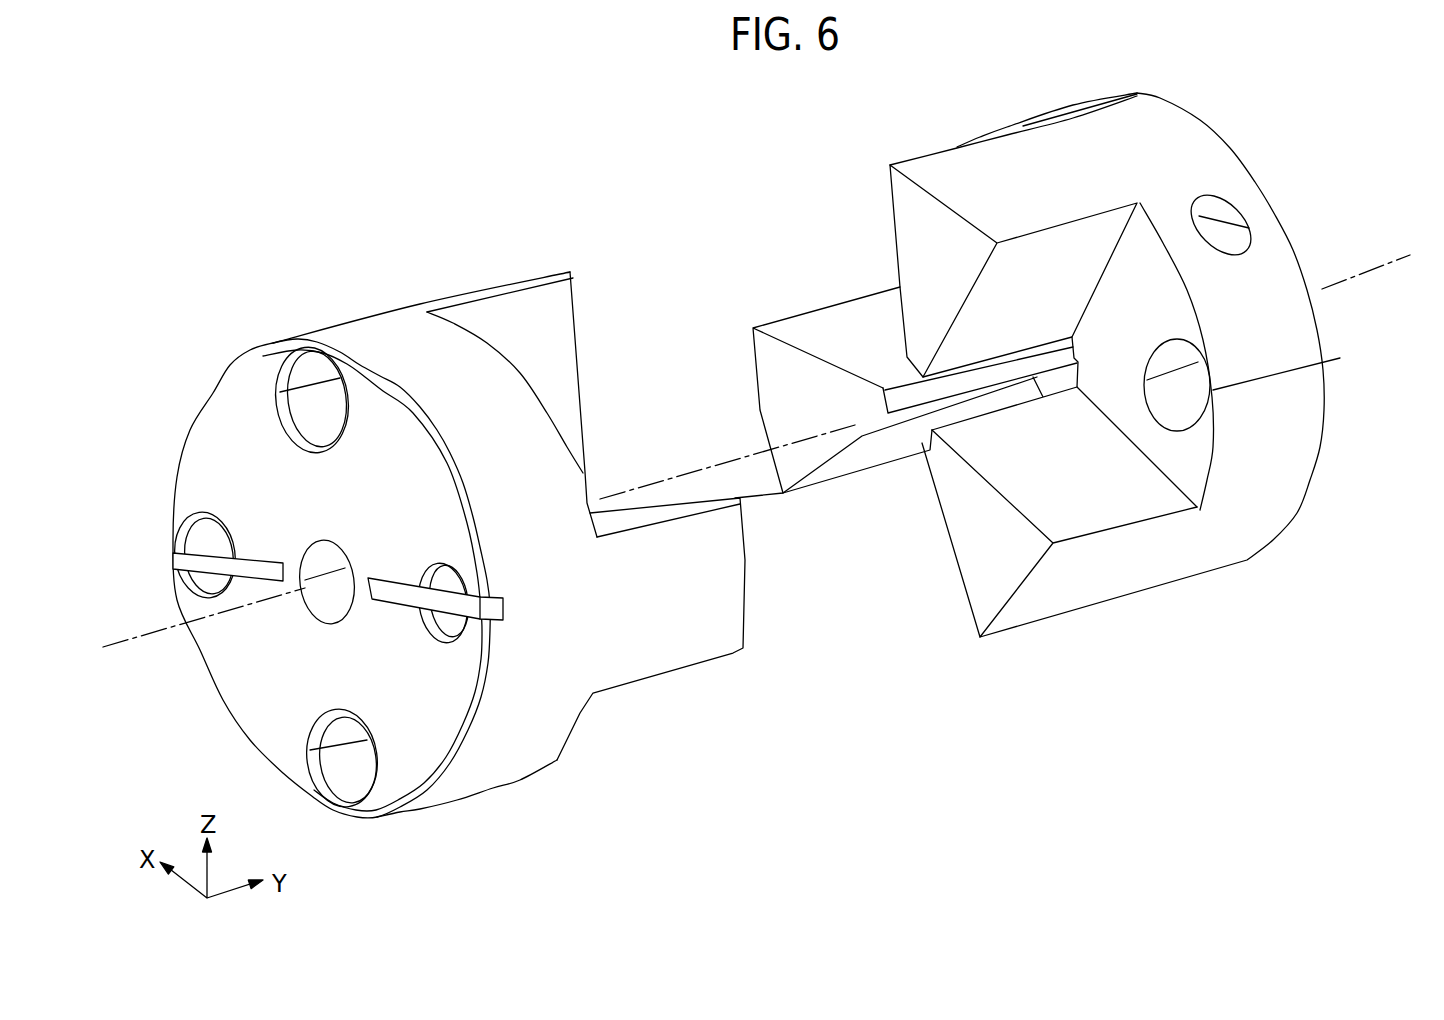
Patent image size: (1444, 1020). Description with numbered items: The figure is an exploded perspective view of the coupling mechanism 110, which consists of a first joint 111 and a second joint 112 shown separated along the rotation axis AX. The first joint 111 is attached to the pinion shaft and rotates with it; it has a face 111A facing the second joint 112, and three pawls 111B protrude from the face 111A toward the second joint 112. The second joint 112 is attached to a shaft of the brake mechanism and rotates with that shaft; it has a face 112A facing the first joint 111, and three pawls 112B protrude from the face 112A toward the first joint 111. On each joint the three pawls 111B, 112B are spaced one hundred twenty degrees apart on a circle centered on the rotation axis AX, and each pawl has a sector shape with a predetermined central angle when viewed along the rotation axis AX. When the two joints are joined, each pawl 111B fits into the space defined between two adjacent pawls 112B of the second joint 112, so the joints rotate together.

The coupling mechanism 110 is at (1431, 61).
The first joint 111 is at (470, 830).
The face 111A is at (467, 328).
The pawls 111B is at (570, 303).
The second joint 112 is at (1155, 626).
The face 112A is at (1168, 303).
The pawls 112B is at (907, 195).
The rotation axis AX is at (1353, 270).